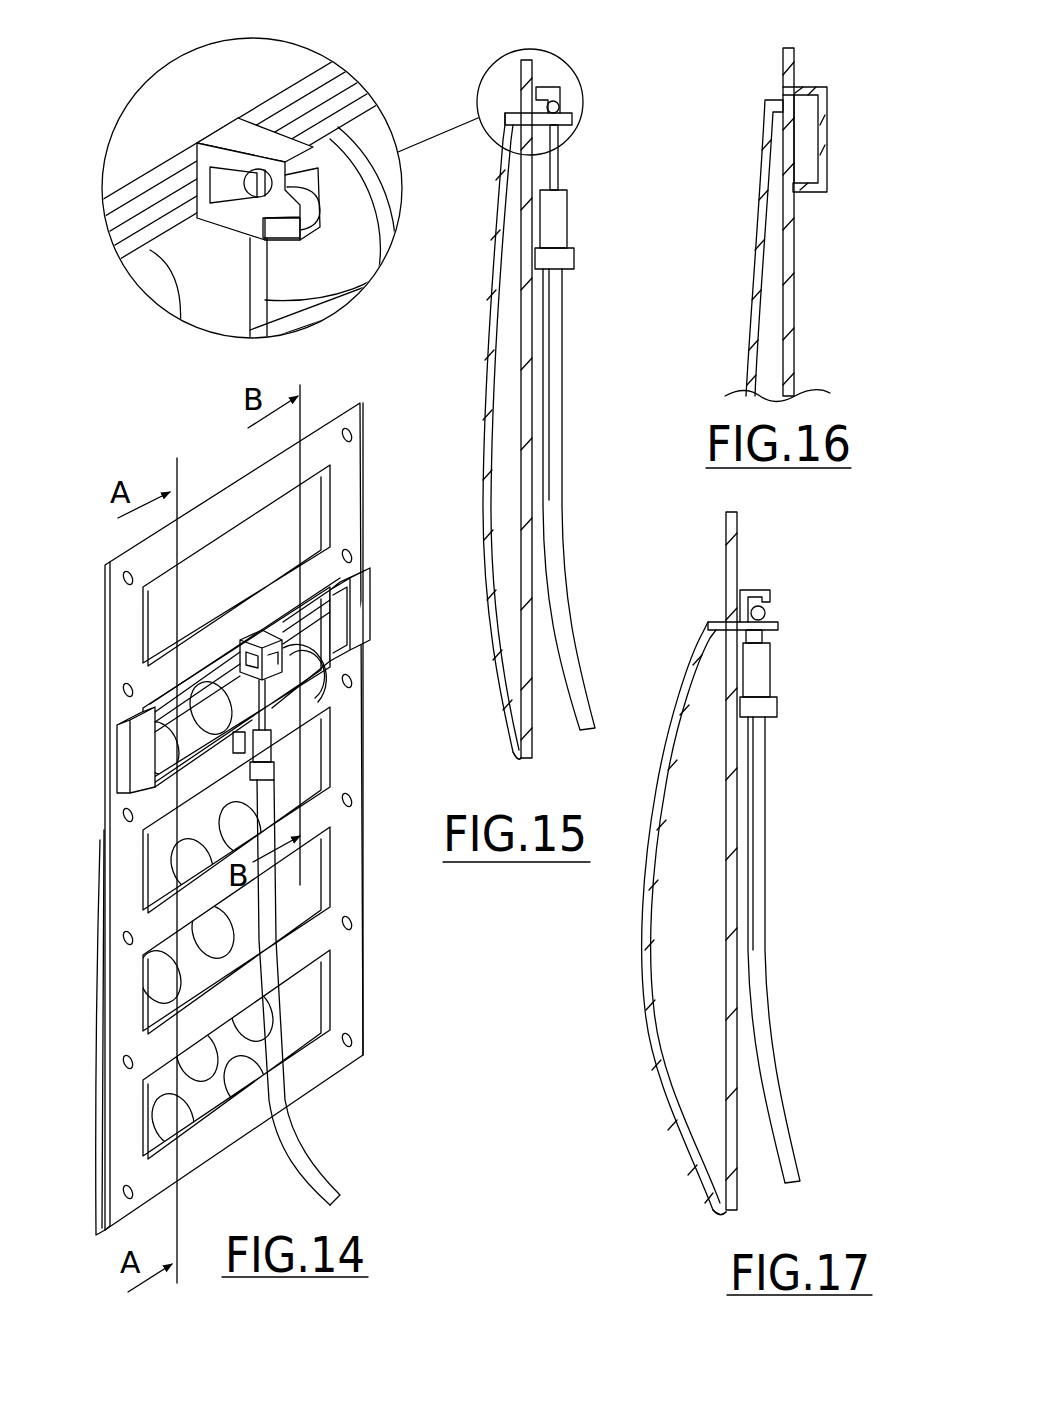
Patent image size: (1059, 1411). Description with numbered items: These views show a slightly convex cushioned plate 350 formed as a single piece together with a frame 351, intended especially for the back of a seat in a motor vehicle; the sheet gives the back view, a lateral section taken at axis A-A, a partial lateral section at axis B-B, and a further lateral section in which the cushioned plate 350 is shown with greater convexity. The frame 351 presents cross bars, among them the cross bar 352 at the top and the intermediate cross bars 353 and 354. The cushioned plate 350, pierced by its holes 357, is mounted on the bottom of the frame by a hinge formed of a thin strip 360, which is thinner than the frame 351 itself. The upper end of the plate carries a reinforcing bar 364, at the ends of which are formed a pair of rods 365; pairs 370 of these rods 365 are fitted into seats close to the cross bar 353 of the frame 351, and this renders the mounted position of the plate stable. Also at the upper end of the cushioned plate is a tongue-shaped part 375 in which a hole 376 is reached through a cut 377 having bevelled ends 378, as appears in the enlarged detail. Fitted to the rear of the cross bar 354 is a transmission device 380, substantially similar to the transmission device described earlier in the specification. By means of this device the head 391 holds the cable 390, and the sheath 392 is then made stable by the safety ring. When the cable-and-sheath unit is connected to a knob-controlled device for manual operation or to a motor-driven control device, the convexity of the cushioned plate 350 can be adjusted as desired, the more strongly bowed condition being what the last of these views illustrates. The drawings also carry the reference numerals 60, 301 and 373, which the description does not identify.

In FIG. 14, the cable 60 is at (262, 772).
In FIG. 15, the rail 301 is at (136, 262).
In FIG. 14, the cushioned plate 350 is at (153, 860).
In FIG. 15, the cushioned plate 350 is at (486, 560).
In FIG. 16, the cushioned plate 350 is at (748, 337).
In FIG. 17, the cushioned plate 350 is at (644, 1015).
In FIG. 14, the frame 351 is at (340, 815).
In FIG. 15, the frame 351 is at (537, 72).
In FIG. 16, the frame 351 is at (796, 330).
In FIG. 17, the frame 351 is at (742, 535).
In FIG. 14, the cross bar 352 is at (245, 497).
In FIG. 14, the cross bar 353 is at (163, 672).
In FIG. 14, the cross bar 354 is at (317, 693).
In FIG. 14, the holes 357 is at (245, 1078).
In FIG. 15, the thin strip 360 is at (513, 762).
In FIG. 17, the thin strip 360 is at (722, 1215).
In FIG. 14, the reinforcing bar 364 is at (345, 578).
In FIG. 16, the reinforcing bar 364 is at (810, 92).
In FIG. 14, the rods 365 is at (358, 596).
In FIG. 16, the pairs of rods 370 is at (800, 160).
In FIG. 14, the clip 373 is at (247, 636).
In FIG. 15, the clip 373 is at (200, 178).
In FIG. 15, the tongue-shaped part 375 is at (578, 121).
In FIG. 17, the tongue-shaped part 375 is at (788, 612).
In FIG. 15, the hole 376 is at (218, 214).
In FIG. 15, the cut 377 is at (243, 143).
In FIG. 15, the bevelled ends 378 is at (322, 222).
In FIG. 14, the transmission device 380 is at (248, 768).
In FIG. 15, the transmission device 380 is at (578, 230).
In FIG. 17, the transmission device 380 is at (780, 682).
In FIG. 15, the cable 390 is at (562, 172).
In FIG. 17, the cable 390 is at (775, 632).
In FIG. 15, the head 391 is at (570, 100).
In FIG. 15, the sheath 392 is at (566, 380).
In FIG. 17, the sheath 392 is at (767, 870).